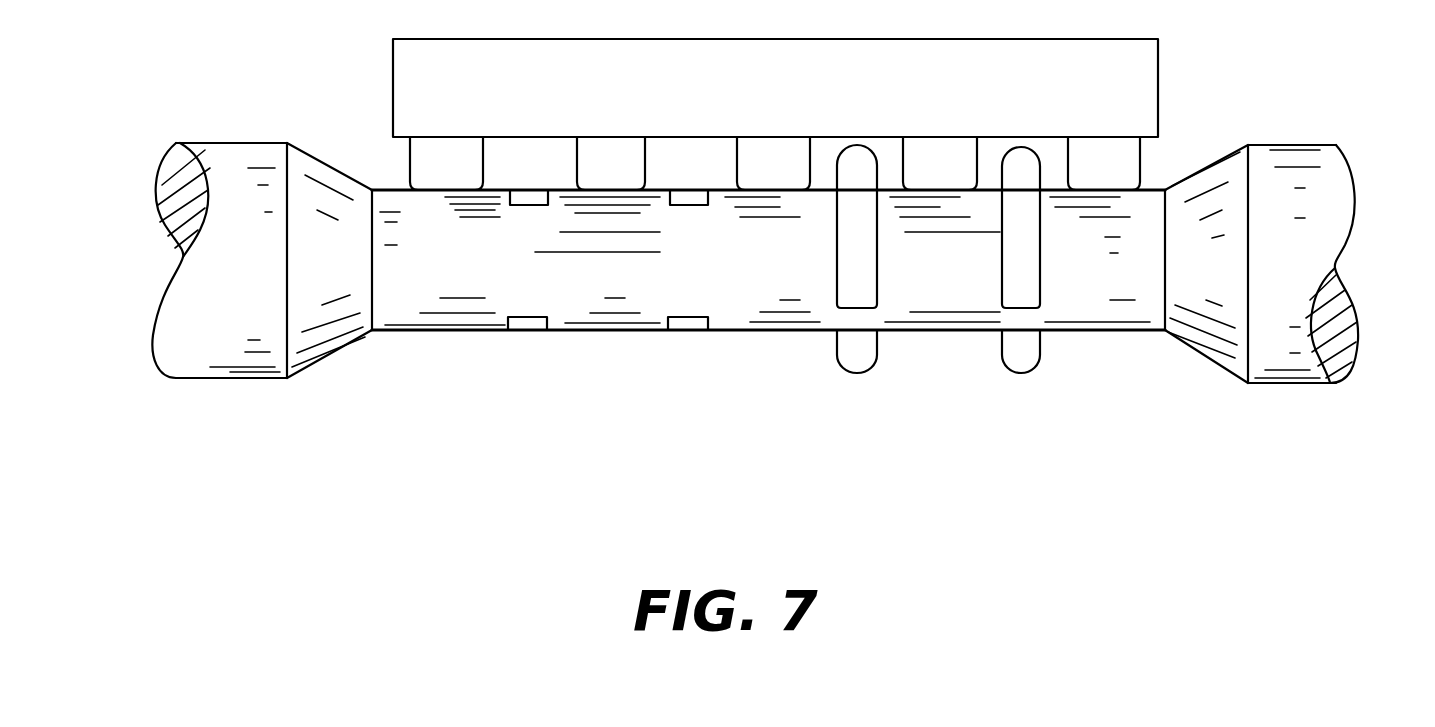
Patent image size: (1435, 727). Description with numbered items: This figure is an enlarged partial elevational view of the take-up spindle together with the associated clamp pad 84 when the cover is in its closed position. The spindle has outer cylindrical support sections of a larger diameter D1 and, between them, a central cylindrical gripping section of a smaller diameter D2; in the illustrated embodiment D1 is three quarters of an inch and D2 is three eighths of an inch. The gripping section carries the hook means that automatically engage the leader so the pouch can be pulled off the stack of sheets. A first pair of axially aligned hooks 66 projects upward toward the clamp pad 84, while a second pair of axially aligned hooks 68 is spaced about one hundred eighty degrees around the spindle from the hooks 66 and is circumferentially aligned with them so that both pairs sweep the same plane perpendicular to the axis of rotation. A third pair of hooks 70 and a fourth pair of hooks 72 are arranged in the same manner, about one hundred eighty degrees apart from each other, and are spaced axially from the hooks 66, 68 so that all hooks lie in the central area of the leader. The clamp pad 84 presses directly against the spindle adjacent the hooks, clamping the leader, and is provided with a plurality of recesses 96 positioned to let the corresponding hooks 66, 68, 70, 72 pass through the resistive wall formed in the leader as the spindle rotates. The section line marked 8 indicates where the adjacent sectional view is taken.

The clamp pad 84 is at (636, 94).
The recesses 96 is at (545, 174).
The first pair of axially aligned hooks 66 is at (835, 278).
The second pair of axially aligned hooks 68 is at (872, 364).
The fourth pair of hooks 72 is at (538, 205).
The third pair of hooks 70 is at (523, 330).
The diameter of spindle in outer support sections D1 is at (228, 150).
The diameter of spindle in gripping section D2 is at (1152, 197).
The section line 8- 8 is at (393, 156).